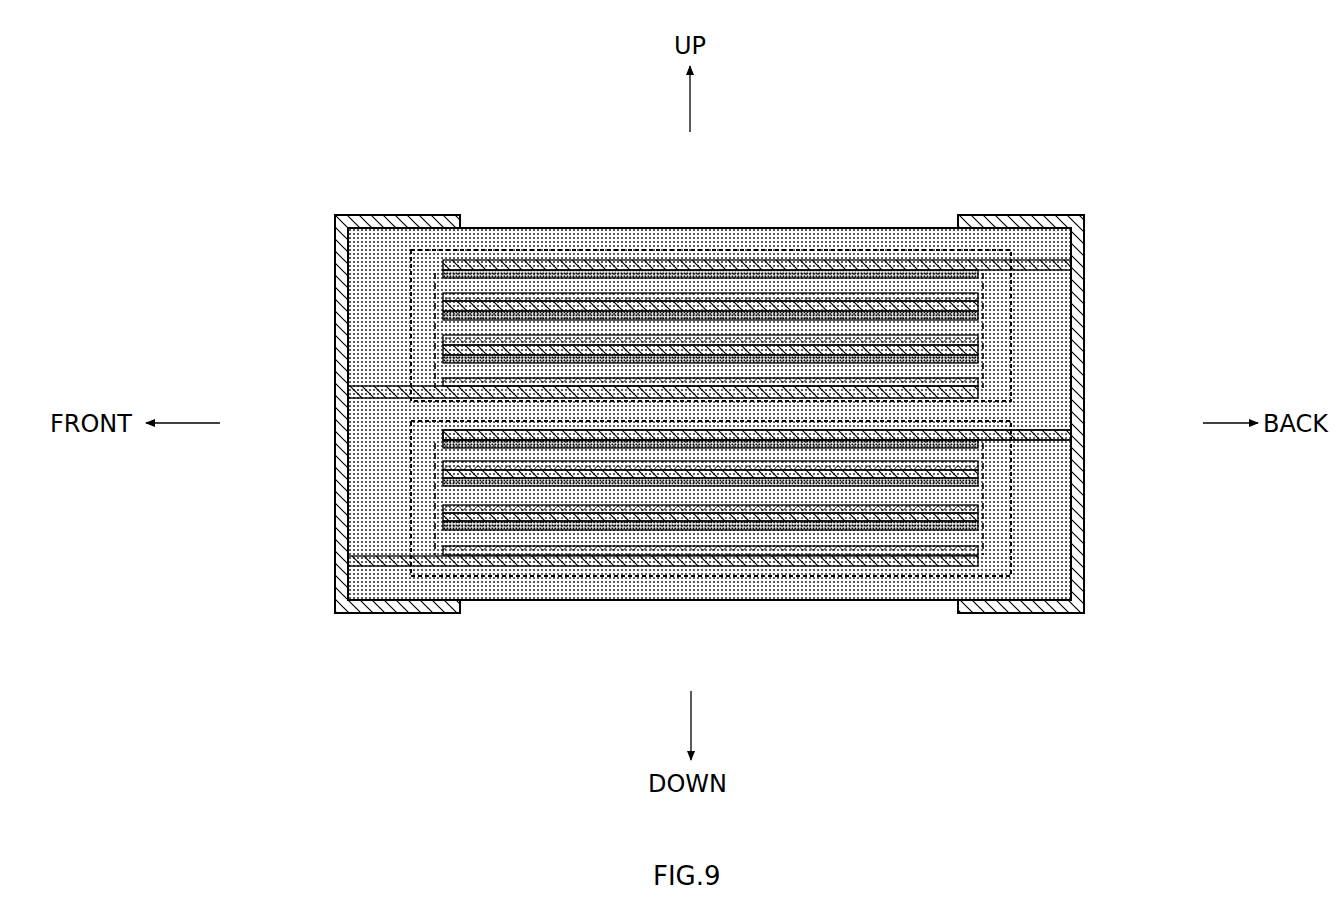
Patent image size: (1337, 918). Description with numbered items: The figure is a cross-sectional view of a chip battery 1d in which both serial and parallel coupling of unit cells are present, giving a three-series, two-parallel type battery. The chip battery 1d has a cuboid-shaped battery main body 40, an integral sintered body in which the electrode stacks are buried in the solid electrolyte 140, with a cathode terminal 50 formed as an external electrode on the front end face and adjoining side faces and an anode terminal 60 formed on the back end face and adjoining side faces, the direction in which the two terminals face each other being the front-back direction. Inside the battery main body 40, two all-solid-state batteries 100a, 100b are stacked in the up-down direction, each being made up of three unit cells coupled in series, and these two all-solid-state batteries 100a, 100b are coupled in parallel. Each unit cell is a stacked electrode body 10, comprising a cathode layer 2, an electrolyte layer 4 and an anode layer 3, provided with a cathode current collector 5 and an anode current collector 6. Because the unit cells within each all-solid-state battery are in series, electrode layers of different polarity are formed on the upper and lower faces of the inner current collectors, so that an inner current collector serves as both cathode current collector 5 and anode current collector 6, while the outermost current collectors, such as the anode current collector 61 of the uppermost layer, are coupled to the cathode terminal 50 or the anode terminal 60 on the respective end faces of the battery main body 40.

The chip battery 1d is at (396, 127).
The cathode layer 2 is at (435, 292).
The anode layer 3 is at (435, 260).
The electrolyte layer 4 is at (430, 270).
The cathode current collector 5 is at (807, 560).
The anode current collector 6 is at (710, 262).
The second internal electrode 61 is at (757, 435).
The stacked electrode body 10 is at (275, 228).
The battery main body 40 is at (845, 220).
The cathode terminal 50 is at (390, 605).
The anode terminal 60 is at (995, 207).
The all-solid-state battery 100a is at (617, 567).
The all-solid-state battery 100b is at (565, 240).
The solid electrolyte 140 is at (507, 228).